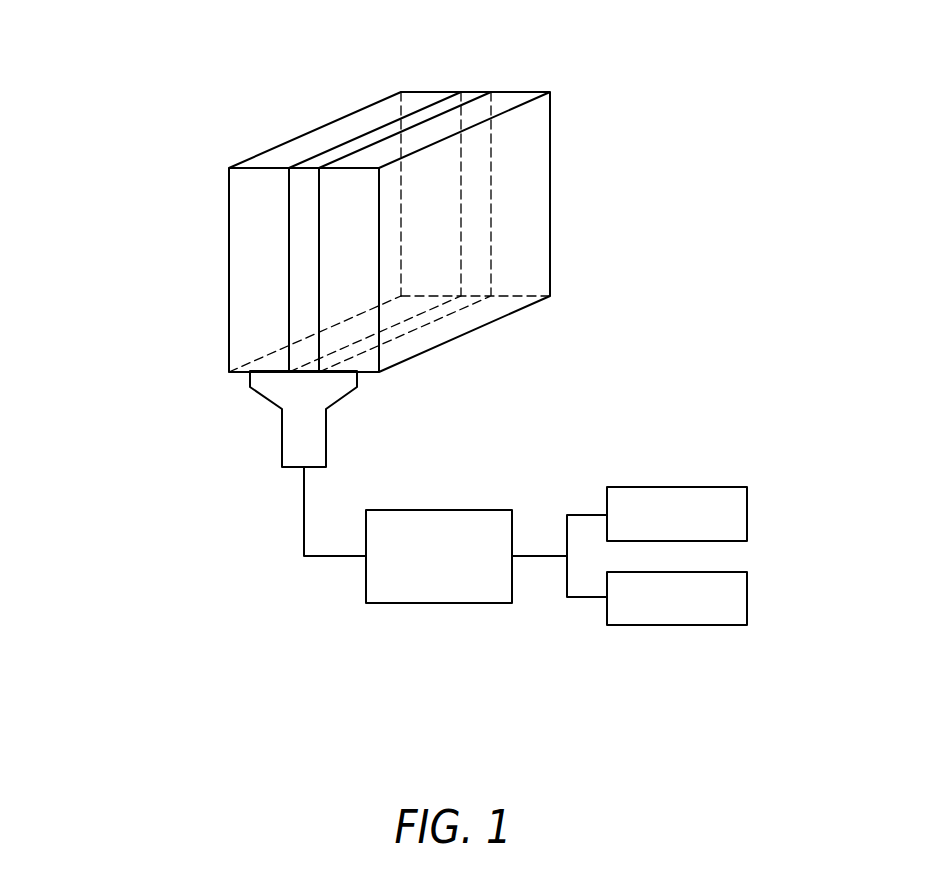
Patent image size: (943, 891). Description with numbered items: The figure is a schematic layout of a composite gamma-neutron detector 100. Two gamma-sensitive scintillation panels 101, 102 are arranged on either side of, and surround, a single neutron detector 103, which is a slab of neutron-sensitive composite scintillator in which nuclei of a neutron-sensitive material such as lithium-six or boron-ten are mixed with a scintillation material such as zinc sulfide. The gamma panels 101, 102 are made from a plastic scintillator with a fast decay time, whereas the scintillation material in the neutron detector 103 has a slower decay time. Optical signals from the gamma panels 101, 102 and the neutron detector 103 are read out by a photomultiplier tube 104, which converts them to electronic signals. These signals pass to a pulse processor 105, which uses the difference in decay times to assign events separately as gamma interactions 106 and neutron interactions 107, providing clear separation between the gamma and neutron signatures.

The composite gamma-neutron detector 100 is at (140, 538).
The gamma-sensitive scintillation panel 101 is at (242, 214).
The gamma-sensitive scintillation panel 102 is at (535, 228).
The neutron detector 103 is at (470, 93).
The photomultiplier tube 104 is at (325, 450).
The pulse processor 105 is at (447, 603).
The gamma interactions 106 is at (717, 487).
The neutron interactions 107 is at (717, 625).